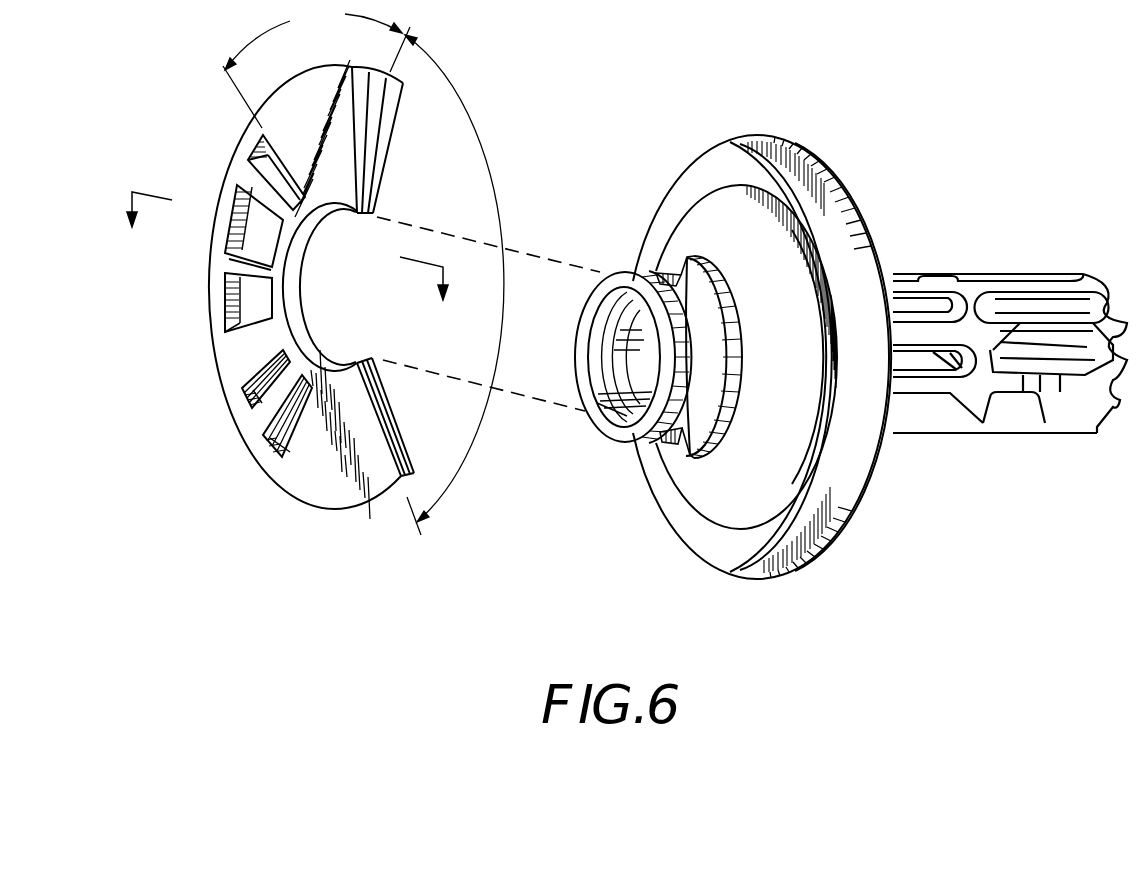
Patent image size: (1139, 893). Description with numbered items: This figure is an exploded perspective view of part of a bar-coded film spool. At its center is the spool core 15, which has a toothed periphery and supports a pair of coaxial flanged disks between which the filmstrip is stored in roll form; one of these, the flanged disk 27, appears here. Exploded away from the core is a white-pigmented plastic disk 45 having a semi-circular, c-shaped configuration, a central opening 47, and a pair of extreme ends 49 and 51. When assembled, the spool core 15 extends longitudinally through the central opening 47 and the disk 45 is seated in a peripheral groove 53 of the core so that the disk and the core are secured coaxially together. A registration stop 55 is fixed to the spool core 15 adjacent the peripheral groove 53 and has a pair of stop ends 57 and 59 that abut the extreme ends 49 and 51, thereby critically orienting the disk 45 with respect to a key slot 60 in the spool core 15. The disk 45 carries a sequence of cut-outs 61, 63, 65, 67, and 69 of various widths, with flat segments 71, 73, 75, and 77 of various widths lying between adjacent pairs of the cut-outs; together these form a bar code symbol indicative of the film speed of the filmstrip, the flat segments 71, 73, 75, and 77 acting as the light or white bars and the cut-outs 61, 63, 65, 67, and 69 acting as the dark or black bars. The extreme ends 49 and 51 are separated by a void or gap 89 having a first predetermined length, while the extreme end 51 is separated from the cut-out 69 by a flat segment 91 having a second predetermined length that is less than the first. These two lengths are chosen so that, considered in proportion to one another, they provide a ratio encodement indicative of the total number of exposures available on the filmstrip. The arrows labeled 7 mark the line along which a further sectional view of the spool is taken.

The section line 7- 7 is at (288, 243).
The spool core 15 is at (983, 270).
The flanged disk 27 is at (833, 550).
The white-pigmented plastic disk 45 is at (300, 510).
The central opening 47 is at (303, 333).
The extreme end 49 is at (392, 420).
The extreme end 51 is at (386, 147).
The peripheral groove 53 is at (657, 277).
The registration stop 55 is at (733, 357).
The stop end 57 is at (683, 452).
The stop end 59 is at (677, 268).
The key slot 60 is at (598, 428).
The cut-out 61 is at (262, 445).
The cut-out 63 is at (245, 400).
The cut-out 65 is at (234, 313).
The cut-out 67 is at (235, 240).
The cut-out 69 is at (258, 132).
The flat segment 71 is at (258, 425).
The flat segment 73 is at (243, 367).
The flat segment 75 is at (237, 263).
The flat segment 77 is at (253, 177).
The gap 89 is at (456, 285).
The flat segment 91 is at (316, 68).